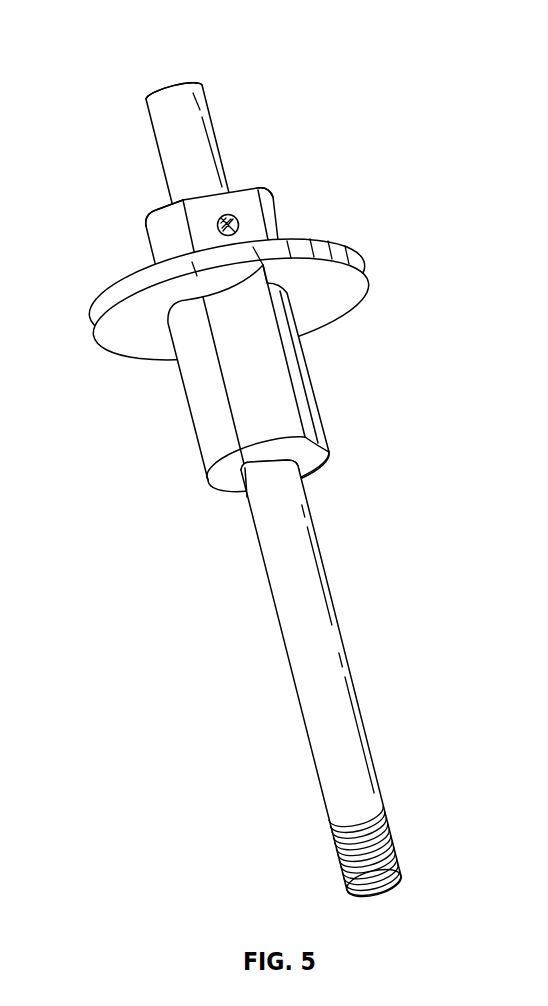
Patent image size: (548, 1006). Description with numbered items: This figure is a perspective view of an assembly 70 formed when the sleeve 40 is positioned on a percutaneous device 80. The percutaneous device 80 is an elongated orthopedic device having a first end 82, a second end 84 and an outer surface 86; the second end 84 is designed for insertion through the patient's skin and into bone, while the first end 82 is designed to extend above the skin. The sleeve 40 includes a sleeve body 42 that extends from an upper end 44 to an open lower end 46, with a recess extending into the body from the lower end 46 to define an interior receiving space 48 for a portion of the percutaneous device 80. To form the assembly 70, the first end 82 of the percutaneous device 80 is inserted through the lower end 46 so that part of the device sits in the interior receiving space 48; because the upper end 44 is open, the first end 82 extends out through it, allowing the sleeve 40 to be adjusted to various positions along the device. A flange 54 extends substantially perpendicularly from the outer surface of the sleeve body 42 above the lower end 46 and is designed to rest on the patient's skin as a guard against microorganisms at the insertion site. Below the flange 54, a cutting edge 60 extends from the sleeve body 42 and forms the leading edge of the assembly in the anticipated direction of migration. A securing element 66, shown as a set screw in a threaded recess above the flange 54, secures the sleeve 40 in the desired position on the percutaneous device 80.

The assembly 70 is at (218, 45).
The percutaneous device 80 is at (152, 139).
The first end 82 is at (153, 81).
The sleeve 40 is at (228, 200).
The sleeve body 42 is at (205, 200).
The upper end 44 is at (153, 212).
The securing element 66 is at (231, 218).
The flange 54 is at (365, 268).
The cutting edge 60 is at (265, 402).
The lower end 46 is at (313, 464).
The interior receiving space 48 is at (257, 468).
The outer surface 86 is at (342, 690).
The second end 84 is at (389, 891).